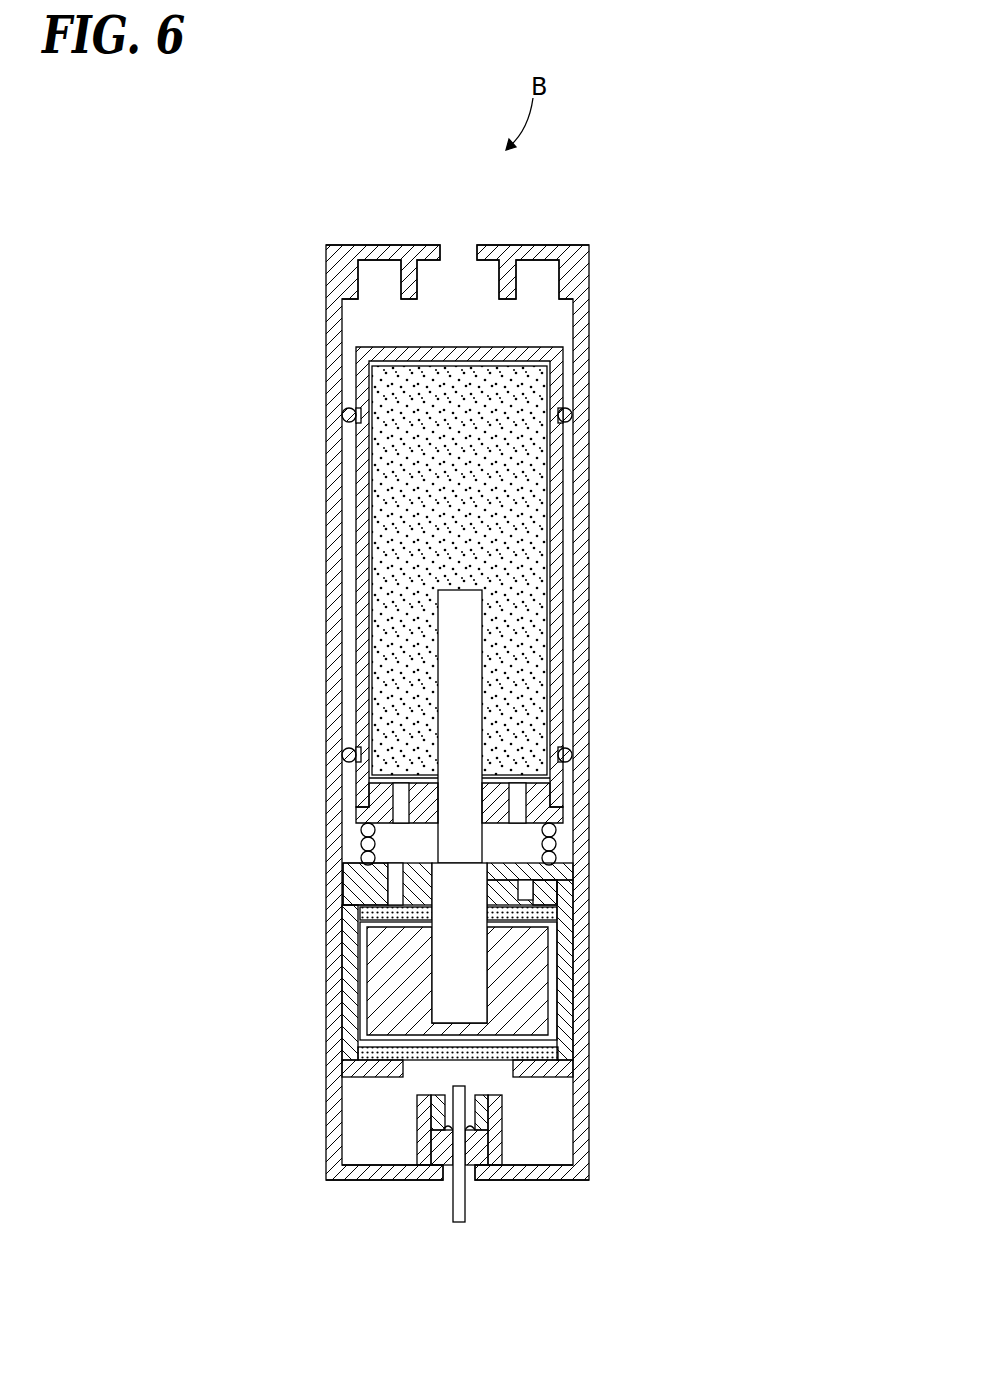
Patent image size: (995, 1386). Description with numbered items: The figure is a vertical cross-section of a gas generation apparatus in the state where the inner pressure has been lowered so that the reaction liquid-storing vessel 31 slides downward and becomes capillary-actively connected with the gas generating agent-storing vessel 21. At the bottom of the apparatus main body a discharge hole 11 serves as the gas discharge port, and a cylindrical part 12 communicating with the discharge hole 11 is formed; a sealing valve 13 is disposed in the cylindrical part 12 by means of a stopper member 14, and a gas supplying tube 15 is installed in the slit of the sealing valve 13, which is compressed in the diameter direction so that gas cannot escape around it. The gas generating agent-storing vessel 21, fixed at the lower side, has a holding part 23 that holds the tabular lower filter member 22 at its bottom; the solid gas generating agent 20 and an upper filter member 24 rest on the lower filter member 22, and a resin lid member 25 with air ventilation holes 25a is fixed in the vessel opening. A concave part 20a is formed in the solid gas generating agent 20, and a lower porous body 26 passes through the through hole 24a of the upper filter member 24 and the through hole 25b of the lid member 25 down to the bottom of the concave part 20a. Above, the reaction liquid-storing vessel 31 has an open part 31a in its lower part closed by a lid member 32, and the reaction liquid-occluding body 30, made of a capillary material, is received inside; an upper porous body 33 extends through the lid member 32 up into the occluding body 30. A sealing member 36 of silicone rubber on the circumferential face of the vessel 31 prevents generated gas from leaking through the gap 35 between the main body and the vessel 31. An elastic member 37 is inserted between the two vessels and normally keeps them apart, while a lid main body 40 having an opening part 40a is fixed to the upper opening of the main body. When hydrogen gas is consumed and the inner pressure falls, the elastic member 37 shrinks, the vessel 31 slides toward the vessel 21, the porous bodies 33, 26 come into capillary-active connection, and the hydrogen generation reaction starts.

The discharge hole 11 is at (448, 1177).
The cylindrical part 12 is at (495, 1142).
The sealing valve 13 is at (437, 1145).
The stopper member 14 is at (502, 1113).
The gas supplying tube 15 is at (460, 1205).
The solid gas generating agent 20 is at (387, 967).
The concave part 20a is at (483, 982).
The gas generating agent-storing vessel 21 is at (350, 1010).
The lower filter member 22 is at (548, 1053).
The holding part 23 is at (555, 1068).
The upper filter member 24 is at (548, 913).
The through hole 24a is at (557, 918).
The lid member 25 is at (552, 862).
The air ventilation holes 25a is at (577, 862).
The through hole 25b is at (535, 876).
The lower porous body 26 is at (447, 892).
The reaction liquid-occluding body 30 is at (393, 567).
The reaction liquid-storing vessel 31 is at (362, 473).
The open part 31a is at (568, 402).
The lid member 32 is at (377, 798).
The upper porous body 33 is at (445, 660).
The gap 35 is at (568, 538).
The sealing member 36 is at (573, 415).
The elastic member 37 is at (362, 845).
The lid main body 40 is at (513, 243).
The opening part 40a is at (457, 253).